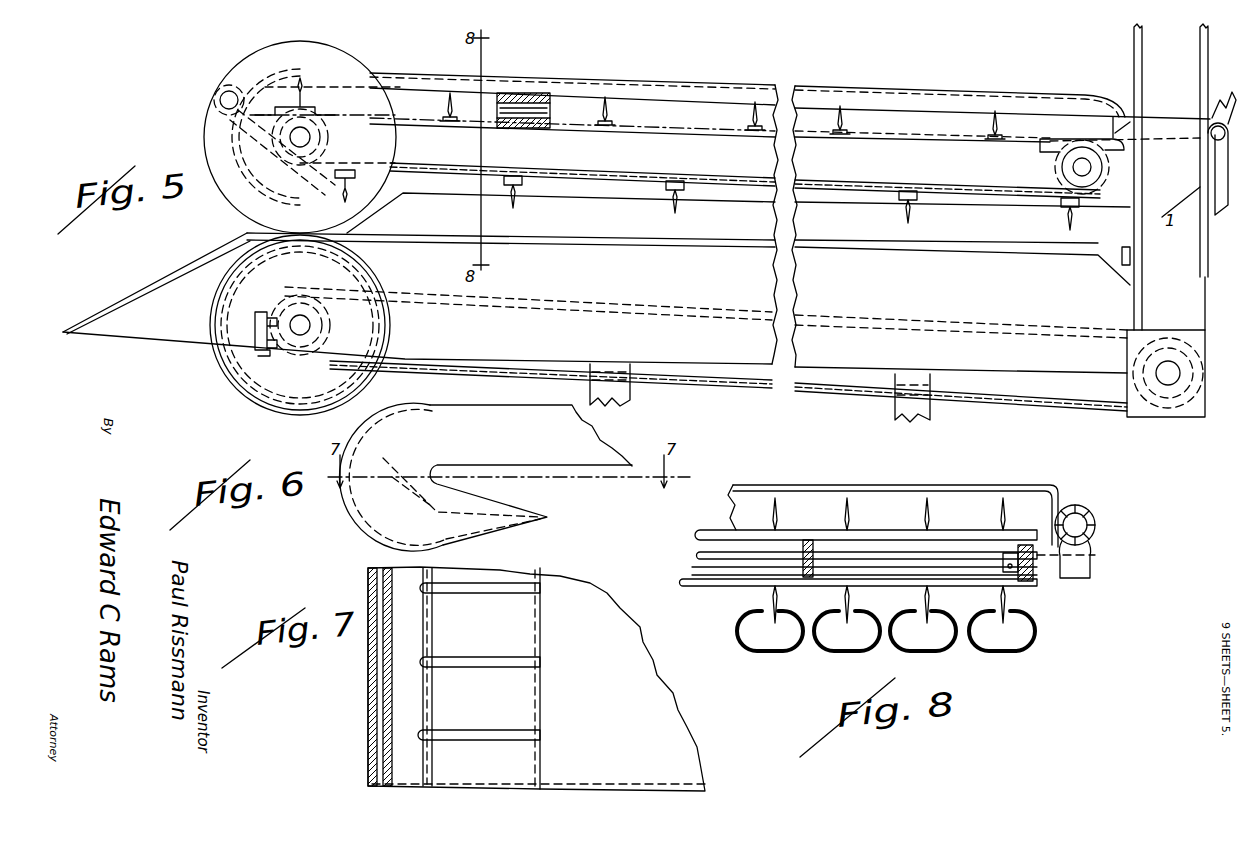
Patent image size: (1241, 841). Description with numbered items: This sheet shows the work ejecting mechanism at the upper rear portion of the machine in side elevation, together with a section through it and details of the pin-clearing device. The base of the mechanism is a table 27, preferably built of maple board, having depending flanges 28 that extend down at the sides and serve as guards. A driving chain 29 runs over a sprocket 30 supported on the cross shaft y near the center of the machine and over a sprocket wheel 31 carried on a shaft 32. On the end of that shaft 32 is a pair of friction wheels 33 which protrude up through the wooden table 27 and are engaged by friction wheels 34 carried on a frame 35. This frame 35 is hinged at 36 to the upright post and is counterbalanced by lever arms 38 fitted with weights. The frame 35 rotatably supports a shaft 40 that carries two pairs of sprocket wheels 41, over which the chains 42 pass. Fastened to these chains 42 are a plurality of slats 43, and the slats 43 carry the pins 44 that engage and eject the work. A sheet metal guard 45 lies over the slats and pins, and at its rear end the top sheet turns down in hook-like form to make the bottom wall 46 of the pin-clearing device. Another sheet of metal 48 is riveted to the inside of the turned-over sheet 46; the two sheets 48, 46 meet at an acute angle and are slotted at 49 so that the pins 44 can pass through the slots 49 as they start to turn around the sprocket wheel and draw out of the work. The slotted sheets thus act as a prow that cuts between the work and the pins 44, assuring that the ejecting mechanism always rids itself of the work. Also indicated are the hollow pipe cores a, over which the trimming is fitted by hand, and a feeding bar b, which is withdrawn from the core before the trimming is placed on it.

In FIG. 5, the table 27 is at (682, 246).
In FIG. 5, the depending flanges 28 is at (178, 350).
In FIG. 5, the driving chain 29 is at (990, 330).
In FIG. 5, the sprocket 30 is at (1166, 415).
In FIG. 5, the sprocket wheel 31 is at (380, 325).
In FIG. 5, the shaft 32 is at (296, 340).
In FIG. 5, the friction wheels 33 is at (350, 395).
In FIG. 5, the friction wheels 34 is at (203, 128).
In FIG. 5, the frame 35 is at (535, 93).
In FIG. 8, the frame 35 is at (1097, 520).
In FIG. 5, the hinge 36 is at (1212, 138).
In FIG. 5, the lever arms 38 is at (1203, 103).
In FIG. 8, the shaft 40 is at (1050, 572).
In FIG. 8, the sprocket wheels 41 is at (1012, 568).
In FIG. 5, the chains 42 is at (945, 192).
In FIG. 5, the slats 43 is at (524, 182).
In FIG. 8, the slats 43 is at (722, 588).
In FIG. 5, the pins 44 is at (850, 108).
In FIG. 8, the pins 44 is at (856, 518).
In FIG. 5, the sheet metal guard 45 is at (962, 104).
In FIG. 6, the sheet metal guard 45 is at (500, 410).
In FIG. 8, the sheet metal guard 45 is at (858, 485).
In FIG. 6, the bottom wall 46 is at (498, 536).
In FIG. 7, the bottom wall 46 is at (536, 679).
In FIG. 6, the sheet of metal 48 is at (496, 517).
In FIG. 7, the sheet of metal 48 is at (523, 716).
In FIG. 7, the slots 49 is at (498, 602).
In FIG. 5, the hollow pipe cores a is at (596, 236).
In FIG. 8, the hollow pipe cores a is at (946, 650).
In FIG. 5, the feeding bar b is at (1138, 255).
In FIG. 5, the cross shaft y is at (1162, 382).